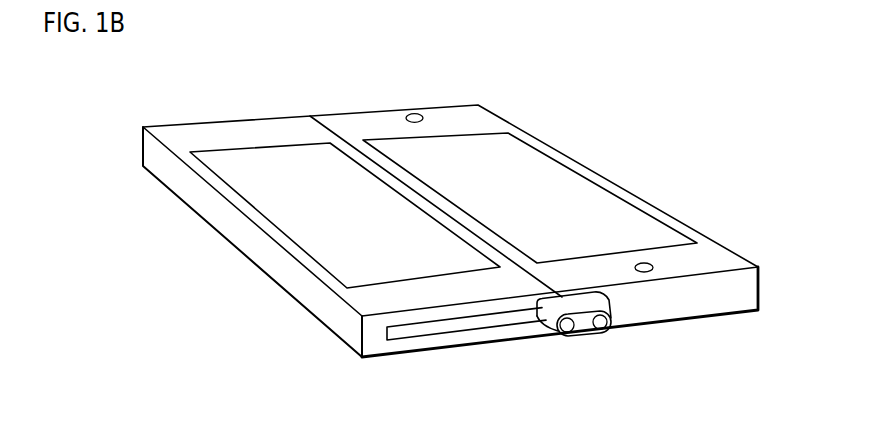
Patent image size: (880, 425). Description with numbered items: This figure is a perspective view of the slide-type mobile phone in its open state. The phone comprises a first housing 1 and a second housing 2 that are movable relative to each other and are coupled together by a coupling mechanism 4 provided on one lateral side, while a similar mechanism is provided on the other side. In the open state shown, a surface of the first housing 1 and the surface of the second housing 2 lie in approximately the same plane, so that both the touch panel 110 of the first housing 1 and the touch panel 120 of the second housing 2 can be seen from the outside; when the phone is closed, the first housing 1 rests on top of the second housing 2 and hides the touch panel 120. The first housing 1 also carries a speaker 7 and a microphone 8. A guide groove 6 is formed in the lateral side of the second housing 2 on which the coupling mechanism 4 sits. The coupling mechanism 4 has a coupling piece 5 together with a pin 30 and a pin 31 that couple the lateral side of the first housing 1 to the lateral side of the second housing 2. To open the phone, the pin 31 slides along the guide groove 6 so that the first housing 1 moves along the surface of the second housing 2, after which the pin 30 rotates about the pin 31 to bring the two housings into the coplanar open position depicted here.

The first housing 1 is at (633, 192).
The second housing 2 is at (257, 250).
The coupling mechanism 4 is at (611, 343).
The coupling piece 5 is at (583, 333).
The guide groove 6 is at (411, 332).
The speaker 7 is at (413, 113).
The microphone 8 is at (643, 263).
The pin 30 is at (614, 329).
The pin 31 is at (565, 337).
The touch panel 110 is at (450, 143).
The touch panel 120 is at (255, 153).